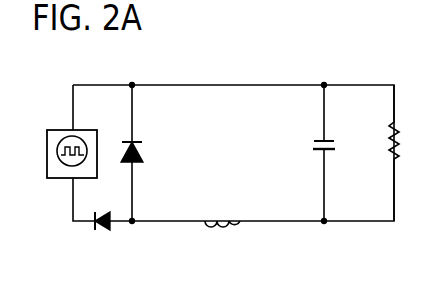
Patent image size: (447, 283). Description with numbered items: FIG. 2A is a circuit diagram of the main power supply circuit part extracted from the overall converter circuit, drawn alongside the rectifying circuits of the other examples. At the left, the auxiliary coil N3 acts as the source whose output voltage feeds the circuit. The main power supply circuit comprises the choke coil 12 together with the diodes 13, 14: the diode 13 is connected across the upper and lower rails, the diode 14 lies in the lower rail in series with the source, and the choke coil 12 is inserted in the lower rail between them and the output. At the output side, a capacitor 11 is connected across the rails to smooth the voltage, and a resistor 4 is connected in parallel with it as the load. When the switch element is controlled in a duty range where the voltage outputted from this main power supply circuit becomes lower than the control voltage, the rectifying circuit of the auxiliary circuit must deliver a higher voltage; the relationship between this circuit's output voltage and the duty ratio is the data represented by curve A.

The auxiliary coil N3 is at (62, 130).
The diode 13 is at (143, 157).
The diode 14 is at (100, 231).
The choke coil 12 is at (228, 221).
The capacitor 11 is at (331, 139).
The resistor / load 4 is at (397, 124).